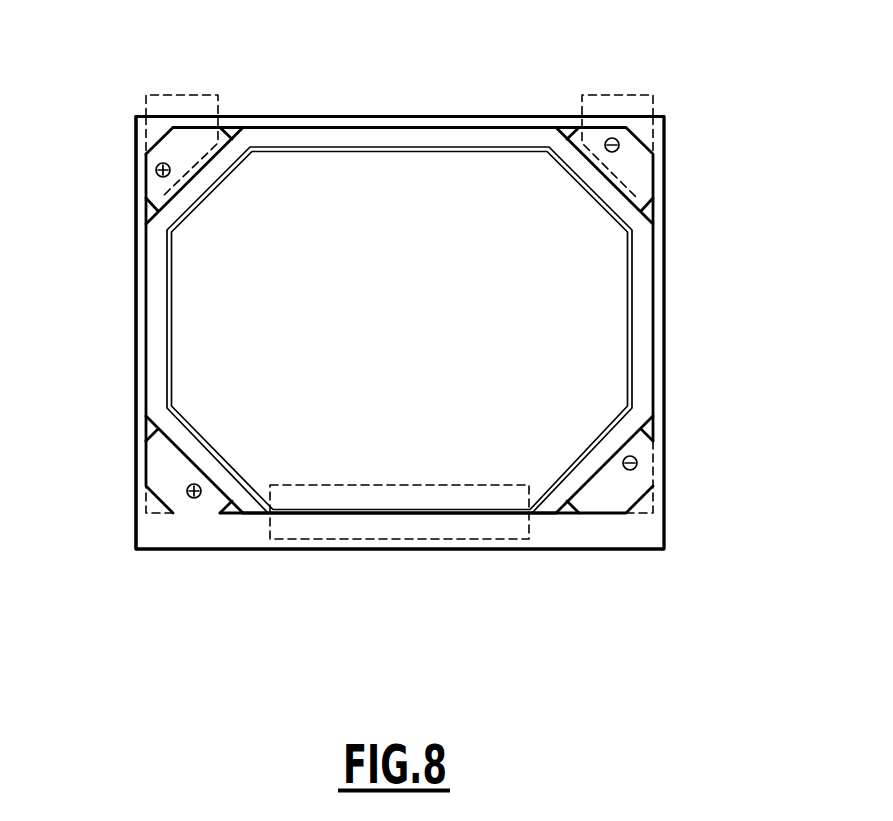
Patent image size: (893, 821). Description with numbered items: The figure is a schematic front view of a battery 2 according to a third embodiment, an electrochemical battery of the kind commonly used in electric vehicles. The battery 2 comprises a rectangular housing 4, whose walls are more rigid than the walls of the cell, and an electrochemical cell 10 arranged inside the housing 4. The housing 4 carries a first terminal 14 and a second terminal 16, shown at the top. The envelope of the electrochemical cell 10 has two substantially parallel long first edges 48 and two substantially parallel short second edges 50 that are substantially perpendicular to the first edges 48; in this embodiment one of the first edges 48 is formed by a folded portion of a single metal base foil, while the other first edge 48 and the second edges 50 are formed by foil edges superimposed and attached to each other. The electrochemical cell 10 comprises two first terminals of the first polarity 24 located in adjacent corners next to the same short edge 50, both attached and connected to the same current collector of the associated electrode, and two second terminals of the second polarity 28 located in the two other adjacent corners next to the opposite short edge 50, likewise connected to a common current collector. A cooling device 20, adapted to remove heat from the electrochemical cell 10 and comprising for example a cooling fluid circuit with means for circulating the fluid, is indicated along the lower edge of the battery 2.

The battery 2 is at (370, 75).
The housing 4 is at (135, 400).
The electrochemical cell 10 is at (557, 282).
The first terminal 14 is at (188, 108).
The second terminal 16 is at (609, 108).
The cooling device 20 is at (413, 523).
The first terminal of the first polarity 24 is at (177, 148).
The second terminal of the second polarity 28 is at (632, 163).
The first edges 48 is at (472, 128).
The second edges 50 is at (146, 350).